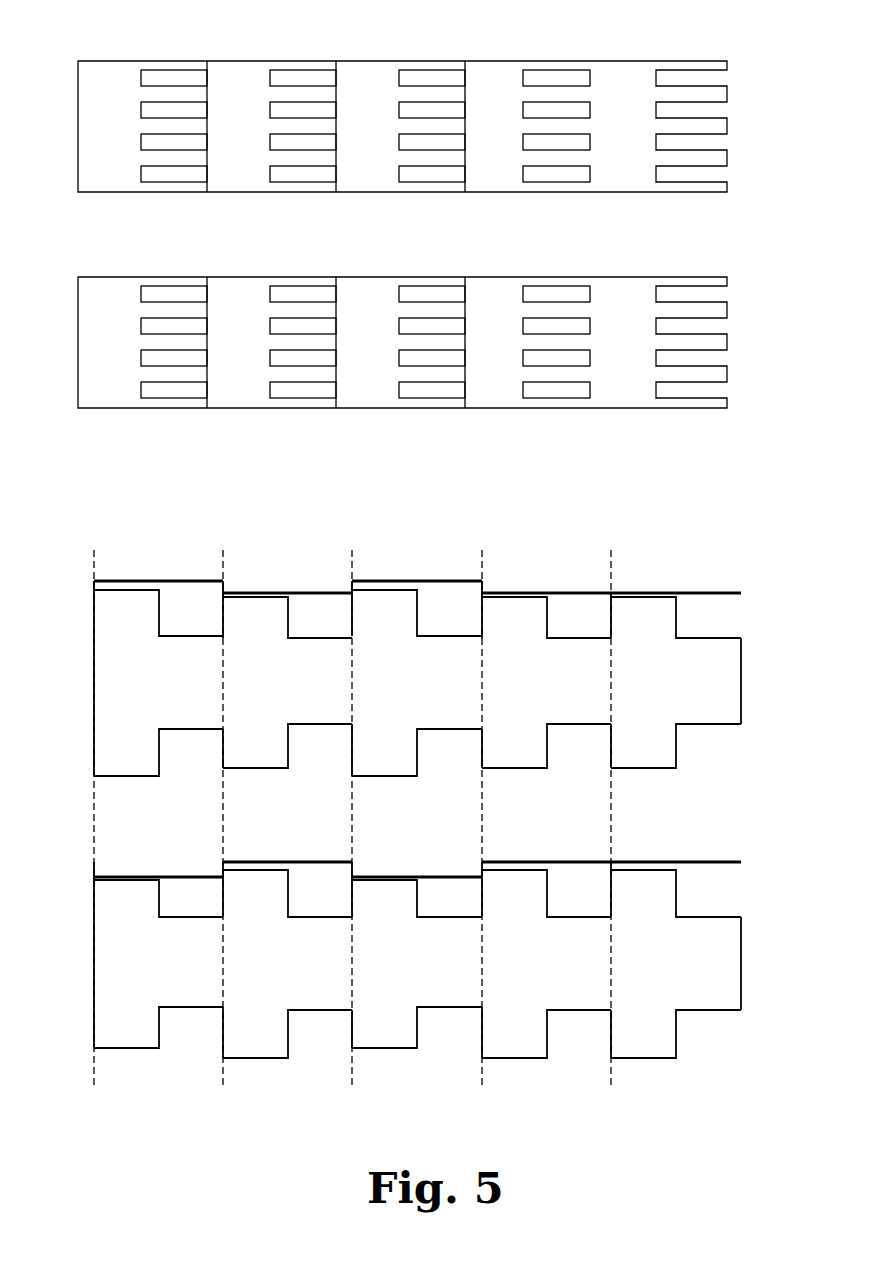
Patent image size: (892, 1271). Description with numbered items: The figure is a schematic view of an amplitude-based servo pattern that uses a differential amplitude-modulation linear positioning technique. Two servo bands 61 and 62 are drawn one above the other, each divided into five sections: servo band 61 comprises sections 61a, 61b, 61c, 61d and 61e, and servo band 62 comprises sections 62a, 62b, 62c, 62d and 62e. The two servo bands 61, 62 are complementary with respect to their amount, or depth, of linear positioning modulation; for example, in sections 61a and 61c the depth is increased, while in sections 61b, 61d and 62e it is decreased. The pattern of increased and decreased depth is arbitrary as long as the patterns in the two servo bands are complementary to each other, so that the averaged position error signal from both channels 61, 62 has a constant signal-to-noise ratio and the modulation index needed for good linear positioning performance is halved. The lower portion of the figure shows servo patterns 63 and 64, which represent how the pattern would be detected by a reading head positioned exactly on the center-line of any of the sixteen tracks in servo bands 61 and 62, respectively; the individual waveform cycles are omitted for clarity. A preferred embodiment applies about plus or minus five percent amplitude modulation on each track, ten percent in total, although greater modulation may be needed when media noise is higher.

The servo band 61 is at (419, 99).
The section of servo band 61a is at (110, 60).
The section of servo band 61b is at (241, 60).
The section of servo band 61c is at (366, 60).
The section of servo band 61d is at (492, 60).
The section of servo band 61e is at (632, 59).
The servo band 62 is at (419, 315).
The section of servo band 62a is at (110, 276).
The section of servo band 62b is at (241, 276).
The section of servo band 62c is at (366, 276).
The section of servo band 62d is at (492, 276).
The section of servo band 62e is at (632, 275).
The servo pattern 63 is at (781, 562).
The servo pattern 64 is at (782, 885).